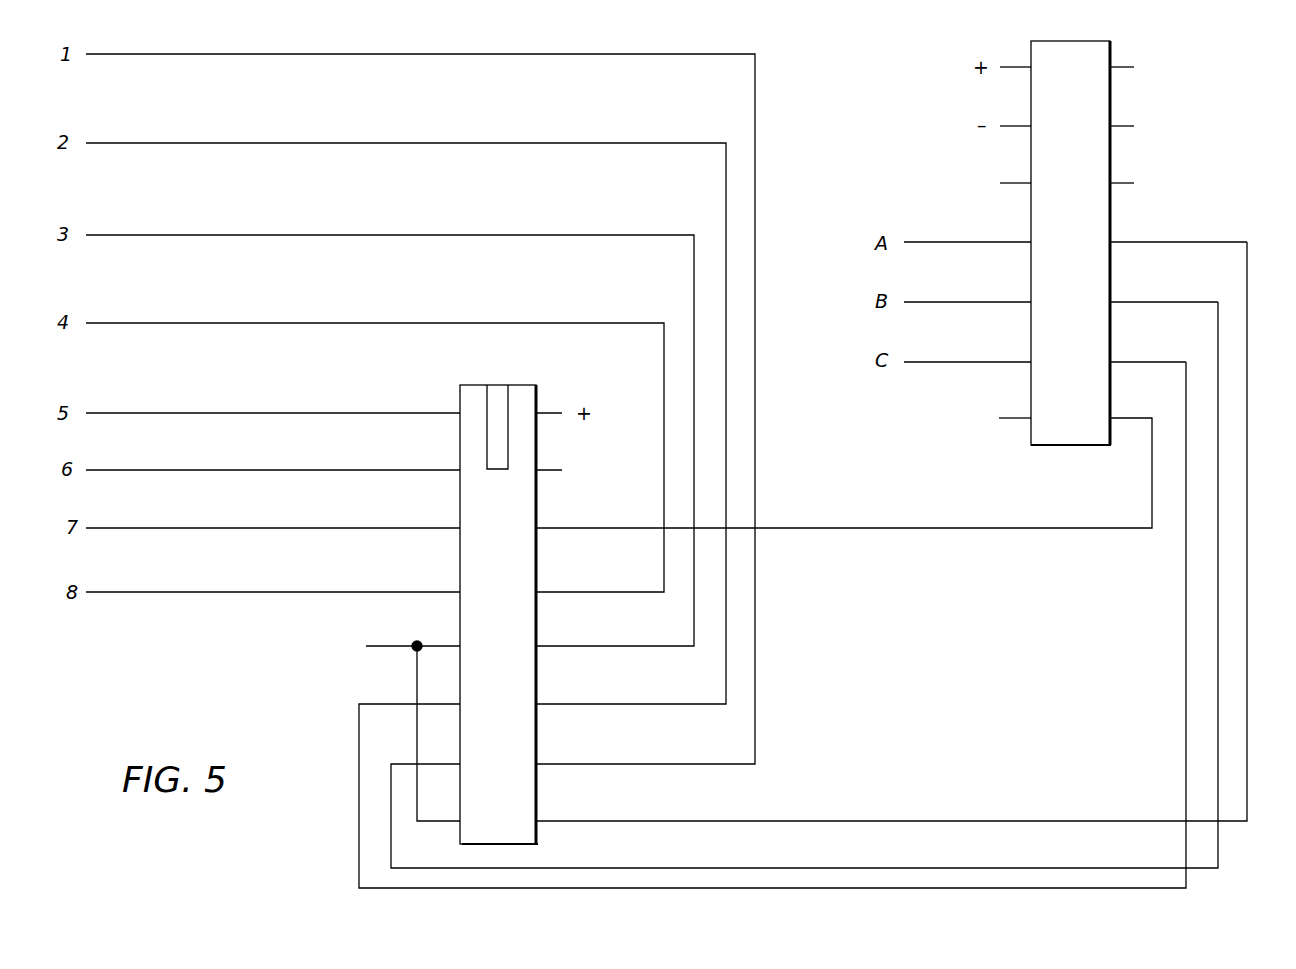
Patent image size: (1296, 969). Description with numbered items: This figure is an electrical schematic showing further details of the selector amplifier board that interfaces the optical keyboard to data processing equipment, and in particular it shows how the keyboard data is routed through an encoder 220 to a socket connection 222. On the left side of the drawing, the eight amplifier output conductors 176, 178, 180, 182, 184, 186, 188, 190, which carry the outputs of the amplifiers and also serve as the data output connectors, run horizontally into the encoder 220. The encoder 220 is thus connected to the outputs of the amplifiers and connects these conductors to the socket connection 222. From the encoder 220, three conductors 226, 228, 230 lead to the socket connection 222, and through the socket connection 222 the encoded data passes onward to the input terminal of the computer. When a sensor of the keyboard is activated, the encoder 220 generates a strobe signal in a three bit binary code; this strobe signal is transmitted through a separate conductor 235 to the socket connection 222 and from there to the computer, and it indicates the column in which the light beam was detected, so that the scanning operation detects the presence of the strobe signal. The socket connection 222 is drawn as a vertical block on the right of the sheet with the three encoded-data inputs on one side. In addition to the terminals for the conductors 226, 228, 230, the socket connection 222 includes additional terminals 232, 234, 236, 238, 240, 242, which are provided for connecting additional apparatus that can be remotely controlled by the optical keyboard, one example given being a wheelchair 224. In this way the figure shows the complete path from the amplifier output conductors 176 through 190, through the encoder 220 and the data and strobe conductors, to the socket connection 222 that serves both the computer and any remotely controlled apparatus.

The amplifier output conductor 176 is at (158, 54).
The amplifier output conductor 178 is at (162, 143).
The amplifier output conductor 180 is at (163, 235).
The amplifier output conductor 182 is at (165, 323).
The amplifier output conductor 184 is at (166, 413).
The amplifier output conductor 186 is at (166, 470).
The amplifier output conductor 188 is at (166, 528).
The amplifier output conductor 190 is at (166, 592).
The encoder 220 is at (518, 680).
The socket connection 222 is at (1084, 342).
The wheelchair 224 is at (858, 238).
The conductor 226 is at (1136, 241).
The conductor 228 is at (1138, 301).
The conductor 230 is at (1128, 361).
The additional terminal 232 is at (1130, 65).
The additional terminal 234 is at (1130, 125).
The conductor 235 is at (866, 528).
The additional terminal 236 is at (1130, 182).
The additional terminal 238 is at (1007, 65).
The additional terminal 240 is at (1017, 125).
The additional terminal 242 is at (1012, 182).